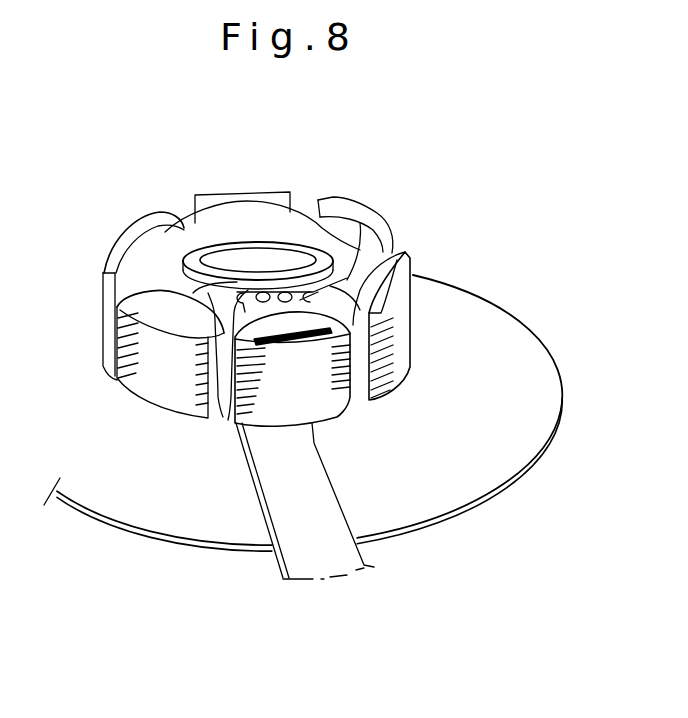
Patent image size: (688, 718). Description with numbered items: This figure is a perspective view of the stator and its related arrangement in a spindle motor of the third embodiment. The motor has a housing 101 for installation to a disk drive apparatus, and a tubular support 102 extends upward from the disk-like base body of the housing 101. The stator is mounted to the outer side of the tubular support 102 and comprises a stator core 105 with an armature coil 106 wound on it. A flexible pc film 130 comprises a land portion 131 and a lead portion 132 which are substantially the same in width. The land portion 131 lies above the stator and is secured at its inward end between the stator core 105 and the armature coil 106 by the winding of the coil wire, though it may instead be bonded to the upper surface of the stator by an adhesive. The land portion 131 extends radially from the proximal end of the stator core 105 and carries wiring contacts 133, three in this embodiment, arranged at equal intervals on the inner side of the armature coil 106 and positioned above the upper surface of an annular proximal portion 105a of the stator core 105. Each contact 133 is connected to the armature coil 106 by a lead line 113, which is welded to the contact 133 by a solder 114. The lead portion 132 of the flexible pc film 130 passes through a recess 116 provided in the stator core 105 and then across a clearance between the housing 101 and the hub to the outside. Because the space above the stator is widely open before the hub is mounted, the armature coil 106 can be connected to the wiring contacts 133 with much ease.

The housing 101 is at (513, 490).
The tubular support 102 is at (347, 237).
The stator core 105 is at (412, 276).
The annular proximal portion 105a is at (167, 253).
The armature coil 106 is at (223, 417).
The lead line 113 is at (216, 290).
The solder 114 is at (205, 338).
The recess 116 is at (268, 283).
The flexible pc film 130 is at (336, 488).
The land portion 131 is at (292, 343).
The lead portion 132 is at (287, 547).
The wiring contact 133 is at (310, 295).